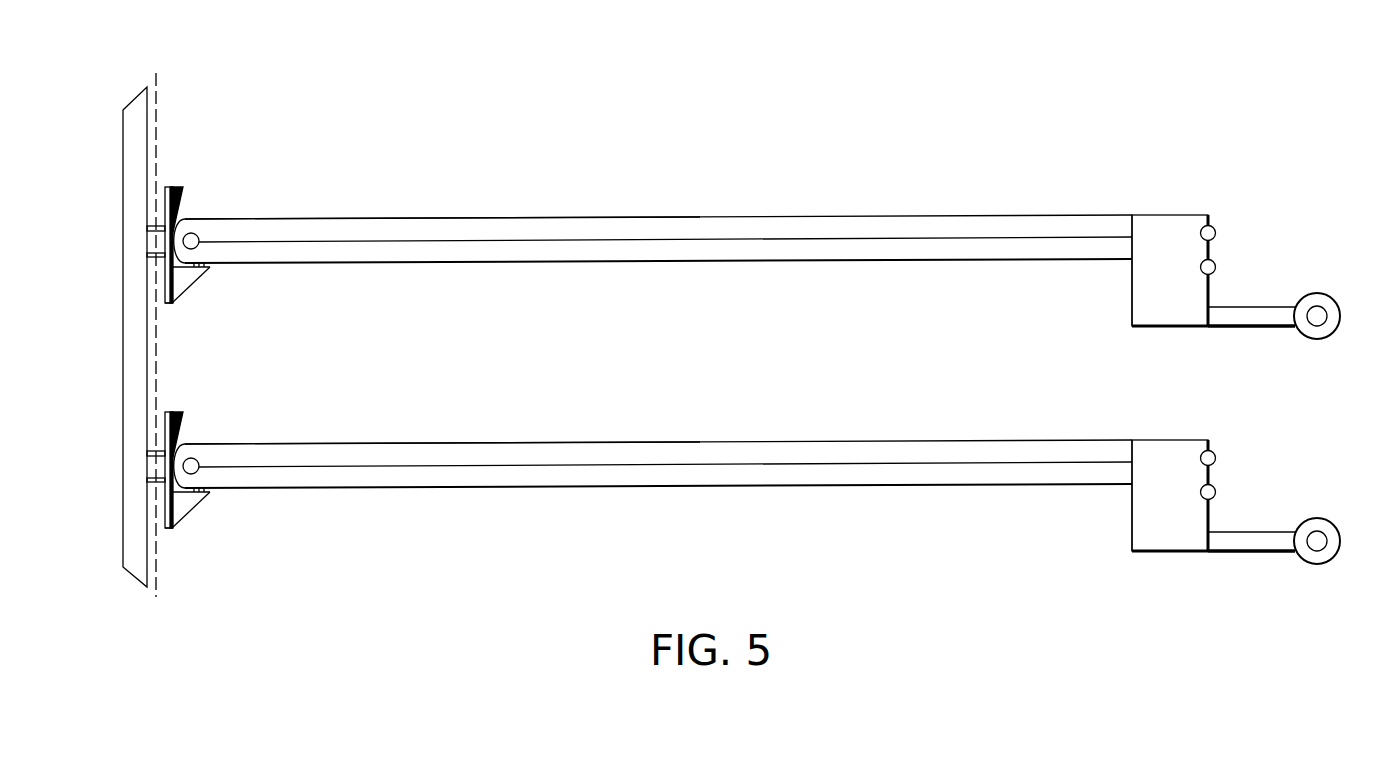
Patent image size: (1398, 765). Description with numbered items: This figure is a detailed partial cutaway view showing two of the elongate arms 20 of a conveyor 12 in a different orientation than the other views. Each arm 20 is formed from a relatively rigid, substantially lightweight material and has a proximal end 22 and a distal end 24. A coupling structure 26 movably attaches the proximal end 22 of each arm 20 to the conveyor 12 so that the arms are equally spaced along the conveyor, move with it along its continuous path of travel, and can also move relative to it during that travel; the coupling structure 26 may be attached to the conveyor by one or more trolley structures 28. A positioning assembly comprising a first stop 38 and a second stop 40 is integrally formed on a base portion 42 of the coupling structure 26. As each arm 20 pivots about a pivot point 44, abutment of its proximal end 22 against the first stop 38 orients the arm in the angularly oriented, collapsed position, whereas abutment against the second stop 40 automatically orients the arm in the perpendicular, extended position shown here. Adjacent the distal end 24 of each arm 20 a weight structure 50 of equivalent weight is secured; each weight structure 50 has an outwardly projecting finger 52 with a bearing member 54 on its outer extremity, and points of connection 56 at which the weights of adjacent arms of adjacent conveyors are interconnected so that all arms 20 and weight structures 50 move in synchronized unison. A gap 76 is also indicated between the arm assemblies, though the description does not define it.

The conveyor 12 is at (133, 273).
The elongate arm 20 is at (743, 218).
The proximal end 22 is at (217, 228).
The distal end 24 is at (1124, 219).
The coupling structure 26 is at (207, 183).
The trolley structure 28 is at (126, 499).
The first stop 38 is at (182, 186).
The second stop 40 is at (198, 281).
The base portion 42 is at (170, 300).
The pivot point 44 is at (199, 245).
The weight structure 50 is at (1180, 323).
The finger 52 is at (1263, 323).
The bearing member 54 is at (1327, 303).
The point of connection 56 is at (1217, 266).
The gap 76 is at (170, 335).